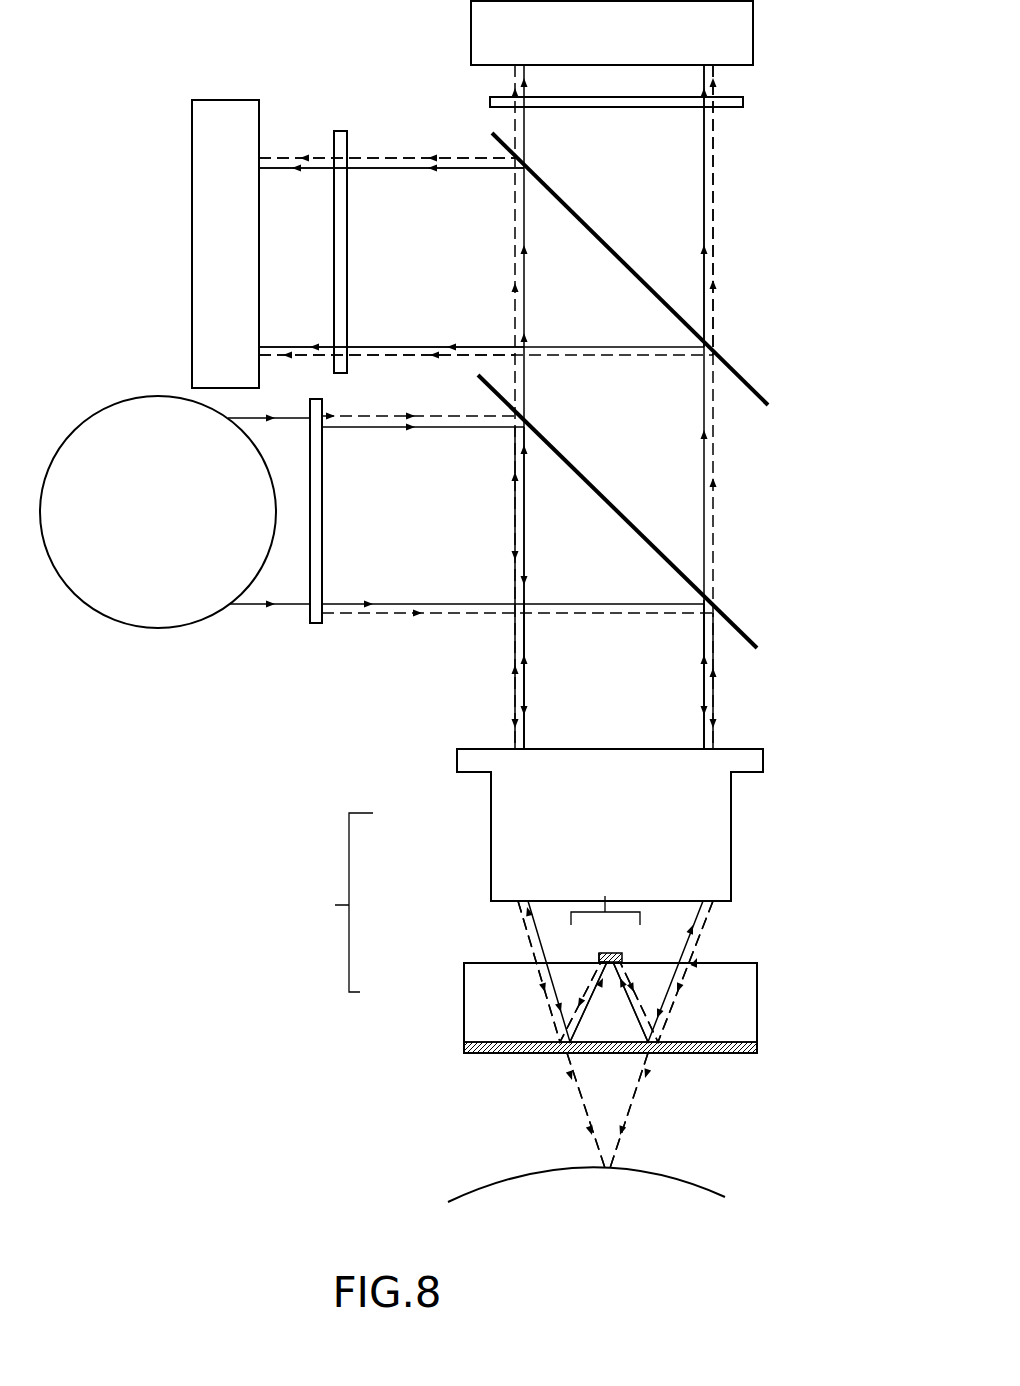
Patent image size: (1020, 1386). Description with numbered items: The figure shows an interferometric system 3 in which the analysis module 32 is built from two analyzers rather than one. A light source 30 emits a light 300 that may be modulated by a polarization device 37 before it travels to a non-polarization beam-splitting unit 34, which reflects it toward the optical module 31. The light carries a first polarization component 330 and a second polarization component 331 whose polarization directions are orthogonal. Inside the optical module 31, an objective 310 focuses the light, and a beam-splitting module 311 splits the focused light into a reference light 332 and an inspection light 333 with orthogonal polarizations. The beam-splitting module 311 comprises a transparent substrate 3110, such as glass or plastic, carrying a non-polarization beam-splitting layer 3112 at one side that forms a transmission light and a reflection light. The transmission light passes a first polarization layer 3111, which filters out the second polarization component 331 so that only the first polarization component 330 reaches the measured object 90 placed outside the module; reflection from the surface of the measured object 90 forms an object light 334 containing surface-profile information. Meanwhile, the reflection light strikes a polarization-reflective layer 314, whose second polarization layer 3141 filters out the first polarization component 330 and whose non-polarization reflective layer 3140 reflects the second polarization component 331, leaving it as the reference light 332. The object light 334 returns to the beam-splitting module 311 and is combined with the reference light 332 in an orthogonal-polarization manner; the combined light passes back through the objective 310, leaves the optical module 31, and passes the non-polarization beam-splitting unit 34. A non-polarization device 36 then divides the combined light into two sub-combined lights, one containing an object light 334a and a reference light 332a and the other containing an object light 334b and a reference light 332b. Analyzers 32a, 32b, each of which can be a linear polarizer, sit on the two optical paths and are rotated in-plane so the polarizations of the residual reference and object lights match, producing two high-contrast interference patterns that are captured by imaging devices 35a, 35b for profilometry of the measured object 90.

The interferometric system 3 is at (158, 166).
The light source 30 is at (151, 518).
The light 300 is at (272, 420).
The optical module 31 is at (568, 918).
The objective 310 is at (490, 840).
The beam-splitting module 311 is at (593, 1025).
The substrate 3110 is at (462, 1037).
The first polarization layer 3111 is at (757, 1053).
The non-polarization beam-splitting layer 3112 is at (760, 1042).
The polarization-reflective layer 314 is at (605, 915).
The non-polarization reflective layer 3140 is at (620, 956).
The second polarization layer 3141 is at (598, 958).
The analysis module 32 is at (583, 102).
The analyzer 32a is at (727, 103).
The analyzer 32b is at (342, 247).
The first polarization component 330 is at (514, 560).
The second polarization component 331 is at (526, 714).
The reference light 332 is at (293, 170).
The reference light 332a is at (703, 245).
The reference light 332b is at (429, 170).
The inspection light 333 is at (592, 1136).
The object light 334 is at (303, 157).
The object light 334a is at (717, 280).
The object light 334b is at (426, 157).
The non-polarization beam-splitting unit 34 is at (614, 517).
The imaging device 35a is at (753, 48).
The imaging device 35b is at (245, 122).
The non-polarization device 36 is at (632, 278).
The polarization device 37 is at (318, 625).
The measured object 90 is at (589, 1236).